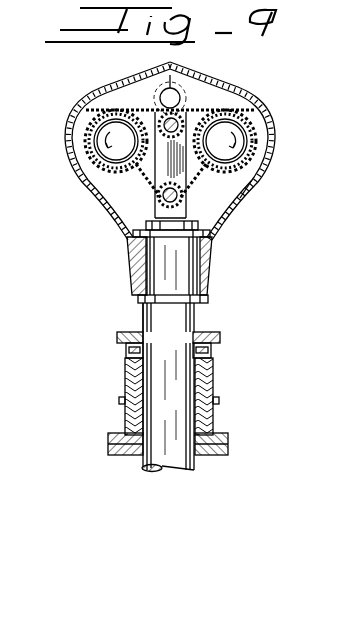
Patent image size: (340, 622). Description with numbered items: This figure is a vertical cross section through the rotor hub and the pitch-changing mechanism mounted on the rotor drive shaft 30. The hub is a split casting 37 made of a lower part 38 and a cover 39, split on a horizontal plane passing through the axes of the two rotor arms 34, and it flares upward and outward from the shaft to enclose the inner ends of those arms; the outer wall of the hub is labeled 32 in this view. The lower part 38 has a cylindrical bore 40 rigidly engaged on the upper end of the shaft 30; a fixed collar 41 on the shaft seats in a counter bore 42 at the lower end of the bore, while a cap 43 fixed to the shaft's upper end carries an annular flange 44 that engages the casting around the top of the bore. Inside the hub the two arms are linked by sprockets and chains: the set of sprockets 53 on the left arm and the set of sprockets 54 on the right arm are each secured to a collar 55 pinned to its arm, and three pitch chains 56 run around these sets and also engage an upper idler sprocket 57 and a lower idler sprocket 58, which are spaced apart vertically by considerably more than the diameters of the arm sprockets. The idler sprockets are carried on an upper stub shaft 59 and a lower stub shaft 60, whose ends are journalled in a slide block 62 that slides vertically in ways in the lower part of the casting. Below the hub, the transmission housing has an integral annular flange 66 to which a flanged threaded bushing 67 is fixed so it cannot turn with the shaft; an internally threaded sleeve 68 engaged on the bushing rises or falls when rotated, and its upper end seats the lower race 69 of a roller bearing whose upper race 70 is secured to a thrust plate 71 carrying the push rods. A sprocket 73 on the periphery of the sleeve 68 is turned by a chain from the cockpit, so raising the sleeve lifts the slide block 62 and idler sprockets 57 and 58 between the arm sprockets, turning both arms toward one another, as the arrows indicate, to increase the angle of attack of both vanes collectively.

The rotor drive shaft 30 is at (180, 460).
The housing 32 is at (76, 110).
The rotor arm 34 is at (256, 141).
The split casting 37 is at (236, 224).
The lower part 38 is at (270, 180).
The cover 39 is at (256, 96).
The cylindrical bore 40 is at (213, 267).
The fixed collar 41 is at (194, 304).
The counter bore 42 is at (209, 298).
The cap 43 is at (143, 227).
The annular flange 44 is at (152, 250).
The set of sprockets 53 is at (126, 185).
The set of sprockets 54 is at (236, 190).
The collar 55 is at (92, 156).
The pitch chains 56 is at (135, 100).
The upper idler sprocket 57 is at (184, 115).
The lower idler sprocket 58 is at (158, 200).
The upper stub shaft 59 is at (169, 66).
The lower stub shaft 60 is at (183, 204).
The slide block 62 is at (164, 164).
The annular flange 66 is at (108, 450).
The flanged threaded bushing 67 is at (228, 439).
The internally threaded sleeve 68 is at (211, 386).
The lower race 69 is at (125, 358).
The upper race 70 is at (128, 339).
The thrust plate 71 is at (214, 339).
The sprocket 73 is at (120, 401).